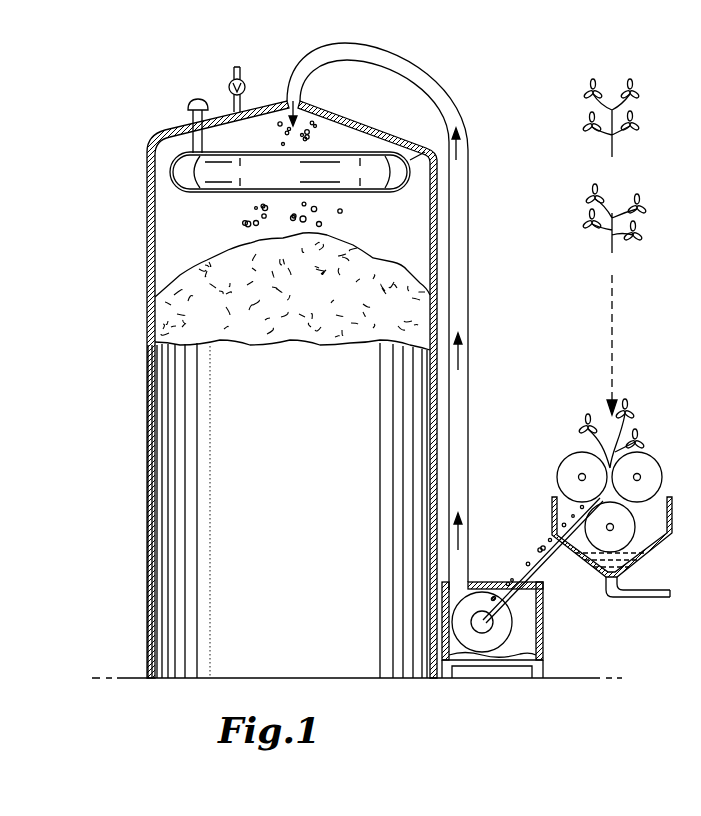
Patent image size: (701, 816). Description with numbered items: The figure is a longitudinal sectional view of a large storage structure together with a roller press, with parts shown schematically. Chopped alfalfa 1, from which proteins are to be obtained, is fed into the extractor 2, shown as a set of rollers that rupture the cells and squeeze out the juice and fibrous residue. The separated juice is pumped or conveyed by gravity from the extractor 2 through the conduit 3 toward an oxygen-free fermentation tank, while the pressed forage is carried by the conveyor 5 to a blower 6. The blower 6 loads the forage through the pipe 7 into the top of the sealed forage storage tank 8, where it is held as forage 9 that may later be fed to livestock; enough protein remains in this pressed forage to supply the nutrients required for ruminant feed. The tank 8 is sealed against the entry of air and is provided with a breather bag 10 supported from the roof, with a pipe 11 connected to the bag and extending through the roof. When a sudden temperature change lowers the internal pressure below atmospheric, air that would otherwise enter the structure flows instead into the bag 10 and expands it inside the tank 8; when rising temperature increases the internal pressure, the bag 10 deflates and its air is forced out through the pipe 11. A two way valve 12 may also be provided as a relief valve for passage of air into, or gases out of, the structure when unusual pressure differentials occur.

The alfalfa 1 is at (636, 88).
The extractor 2 is at (657, 458).
The conduit 3 is at (663, 595).
The conveyor 5 is at (540, 556).
The blower 6 is at (512, 620).
The pipe 7 is at (441, 102).
The forage storage tank 8 is at (332, 399).
The forage 9 is at (200, 316).
The breather bag 10 is at (180, 170).
The pipe 11 is at (188, 107).
The two way valve 12 is at (246, 85).